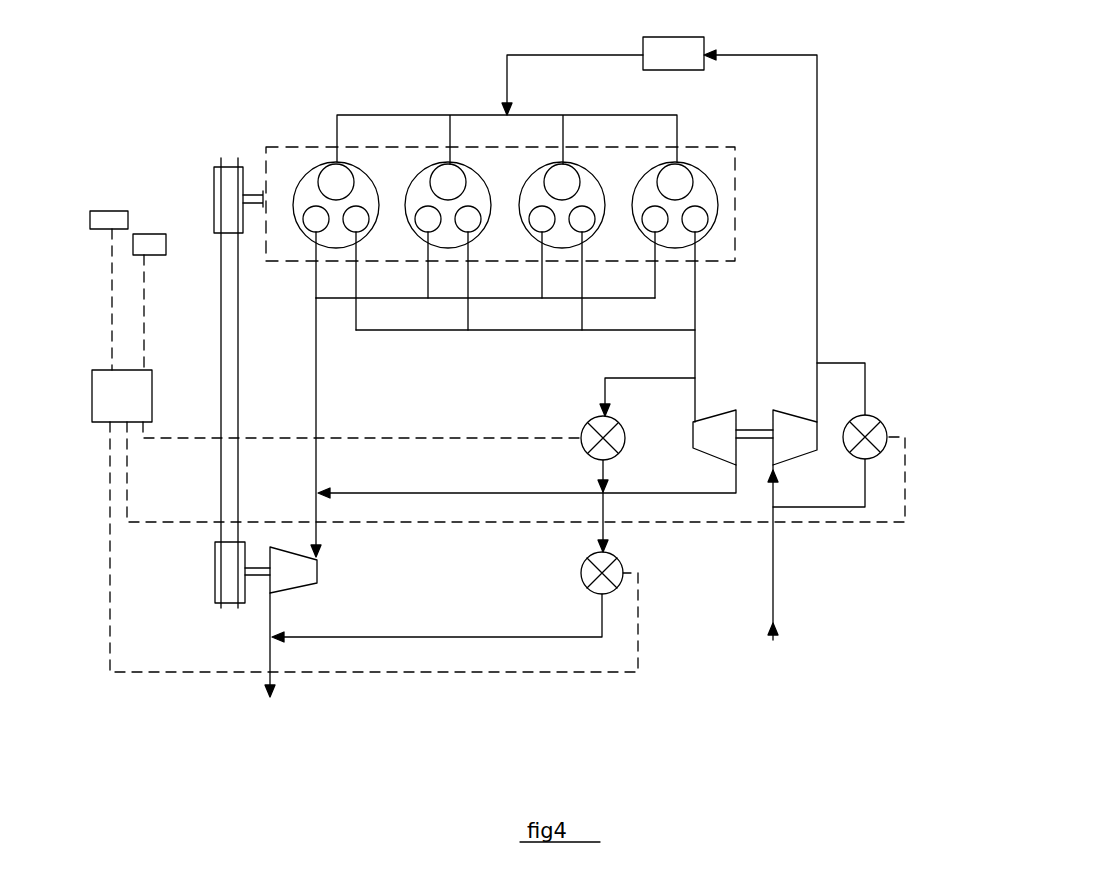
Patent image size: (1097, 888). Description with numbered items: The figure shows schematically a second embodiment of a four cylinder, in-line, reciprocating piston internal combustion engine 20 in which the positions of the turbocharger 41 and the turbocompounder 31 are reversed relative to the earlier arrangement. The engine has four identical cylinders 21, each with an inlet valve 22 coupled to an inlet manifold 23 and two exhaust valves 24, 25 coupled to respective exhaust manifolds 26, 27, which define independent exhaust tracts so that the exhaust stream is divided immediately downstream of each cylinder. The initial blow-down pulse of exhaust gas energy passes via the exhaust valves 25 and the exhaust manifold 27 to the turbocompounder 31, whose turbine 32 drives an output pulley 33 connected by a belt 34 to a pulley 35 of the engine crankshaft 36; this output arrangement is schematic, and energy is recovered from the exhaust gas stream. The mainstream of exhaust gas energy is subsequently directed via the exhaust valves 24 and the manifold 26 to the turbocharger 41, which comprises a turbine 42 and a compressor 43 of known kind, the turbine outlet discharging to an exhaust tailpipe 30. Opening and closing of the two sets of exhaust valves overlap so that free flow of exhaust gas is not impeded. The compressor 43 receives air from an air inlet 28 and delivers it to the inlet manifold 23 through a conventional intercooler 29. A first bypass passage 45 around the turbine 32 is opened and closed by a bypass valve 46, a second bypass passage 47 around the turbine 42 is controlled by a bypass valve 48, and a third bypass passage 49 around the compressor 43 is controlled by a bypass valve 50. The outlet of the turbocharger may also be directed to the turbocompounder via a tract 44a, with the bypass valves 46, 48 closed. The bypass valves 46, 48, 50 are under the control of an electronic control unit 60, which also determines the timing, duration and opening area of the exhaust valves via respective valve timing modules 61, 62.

The internal combustion engine 20 is at (726, 144).
The cylinder 21 is at (700, 194).
The inlet valve 22 is at (330, 175).
The inlet manifold 23 is at (422, 84).
The exhaust valve 24 is at (346, 234).
The exhaust valve 25 is at (313, 243).
The exhaust manifold 26 is at (505, 336).
The exhaust manifold 27 is at (316, 298).
The air inlet 28 is at (775, 612).
The intercooler 29 is at (680, 46).
The exhaust tailpipe 30 is at (266, 682).
The turbocompounder 31 is at (198, 606).
The turbine 32 is at (300, 573).
The output pulley 33 is at (215, 571).
The belt 34 is at (221, 338).
The pulley 35 is at (214, 185).
The engine crankshaft 36 is at (250, 193).
The turbocharger 41 is at (750, 410).
The turbine 42 is at (716, 425).
The compressor 43 is at (797, 419).
The tract 44a is at (452, 470).
The first bypass passage 45 is at (508, 637).
The bypass valve 46 is at (621, 567).
The second bypass passage 47 is at (634, 378).
The bypass valve 48 is at (584, 428).
The third bypass passage 49 is at (872, 345).
The bypass valve 50 is at (879, 422).
The electronic control unit 60 is at (134, 409).
The valve timing module 61 is at (122, 211).
The valve timing module 62 is at (155, 236).